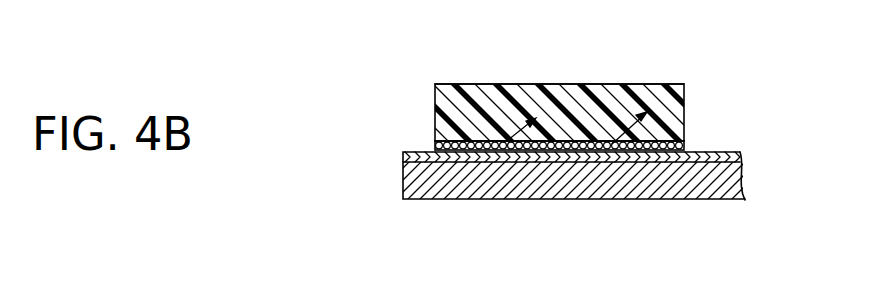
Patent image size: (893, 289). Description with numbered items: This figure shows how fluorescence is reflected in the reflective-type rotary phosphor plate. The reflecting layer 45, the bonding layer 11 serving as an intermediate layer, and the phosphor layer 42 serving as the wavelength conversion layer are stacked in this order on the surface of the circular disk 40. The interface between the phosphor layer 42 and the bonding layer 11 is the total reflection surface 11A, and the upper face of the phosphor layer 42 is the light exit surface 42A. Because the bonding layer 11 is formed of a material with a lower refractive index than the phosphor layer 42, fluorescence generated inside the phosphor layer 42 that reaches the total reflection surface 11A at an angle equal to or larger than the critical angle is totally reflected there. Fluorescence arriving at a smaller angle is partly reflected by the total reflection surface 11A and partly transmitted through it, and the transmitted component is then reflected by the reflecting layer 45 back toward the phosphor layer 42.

The circular disk 40 is at (476, 183).
The reflecting layer 45 is at (403, 157).
The bonding layer 11 is at (682, 145).
The total reflection surface 11A is at (447, 140).
The phosphor layer 42 is at (678, 103).
The light exit surface 42A is at (450, 84).